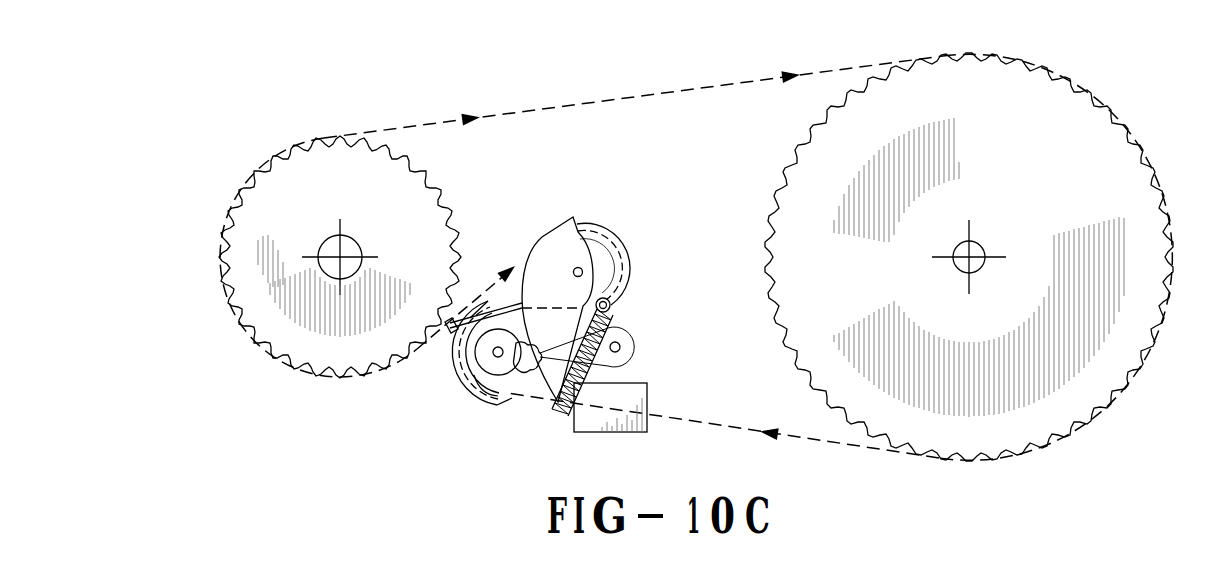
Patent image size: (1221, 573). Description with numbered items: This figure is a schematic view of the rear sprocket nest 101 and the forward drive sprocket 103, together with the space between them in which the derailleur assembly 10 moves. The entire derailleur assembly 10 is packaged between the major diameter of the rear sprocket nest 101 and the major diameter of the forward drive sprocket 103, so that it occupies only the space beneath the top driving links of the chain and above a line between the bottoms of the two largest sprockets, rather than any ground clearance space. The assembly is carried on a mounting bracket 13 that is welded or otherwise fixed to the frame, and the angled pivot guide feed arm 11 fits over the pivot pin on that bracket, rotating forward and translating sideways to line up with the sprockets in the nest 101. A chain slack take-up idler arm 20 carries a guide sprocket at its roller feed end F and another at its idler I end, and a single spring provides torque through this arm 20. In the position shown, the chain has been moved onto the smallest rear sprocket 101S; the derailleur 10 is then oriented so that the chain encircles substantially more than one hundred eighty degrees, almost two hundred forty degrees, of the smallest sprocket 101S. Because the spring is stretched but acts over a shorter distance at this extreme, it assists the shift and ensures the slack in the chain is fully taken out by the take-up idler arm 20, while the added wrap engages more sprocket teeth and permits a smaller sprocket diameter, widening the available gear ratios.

The derailleur assembly 10 is at (648, 343).
The pivot guide feed arm 11 is at (546, 236).
The roller feed end F is at (588, 236).
The idler I is at (480, 381).
The chain slack take-up idler arm 20 is at (494, 396).
The mounting bracket 13 is at (617, 417).
The sprocket nest 101 is at (273, 332).
The smallest rear sprocket 101S is at (297, 192).
The forward drive sprocket 103 is at (1008, 98).